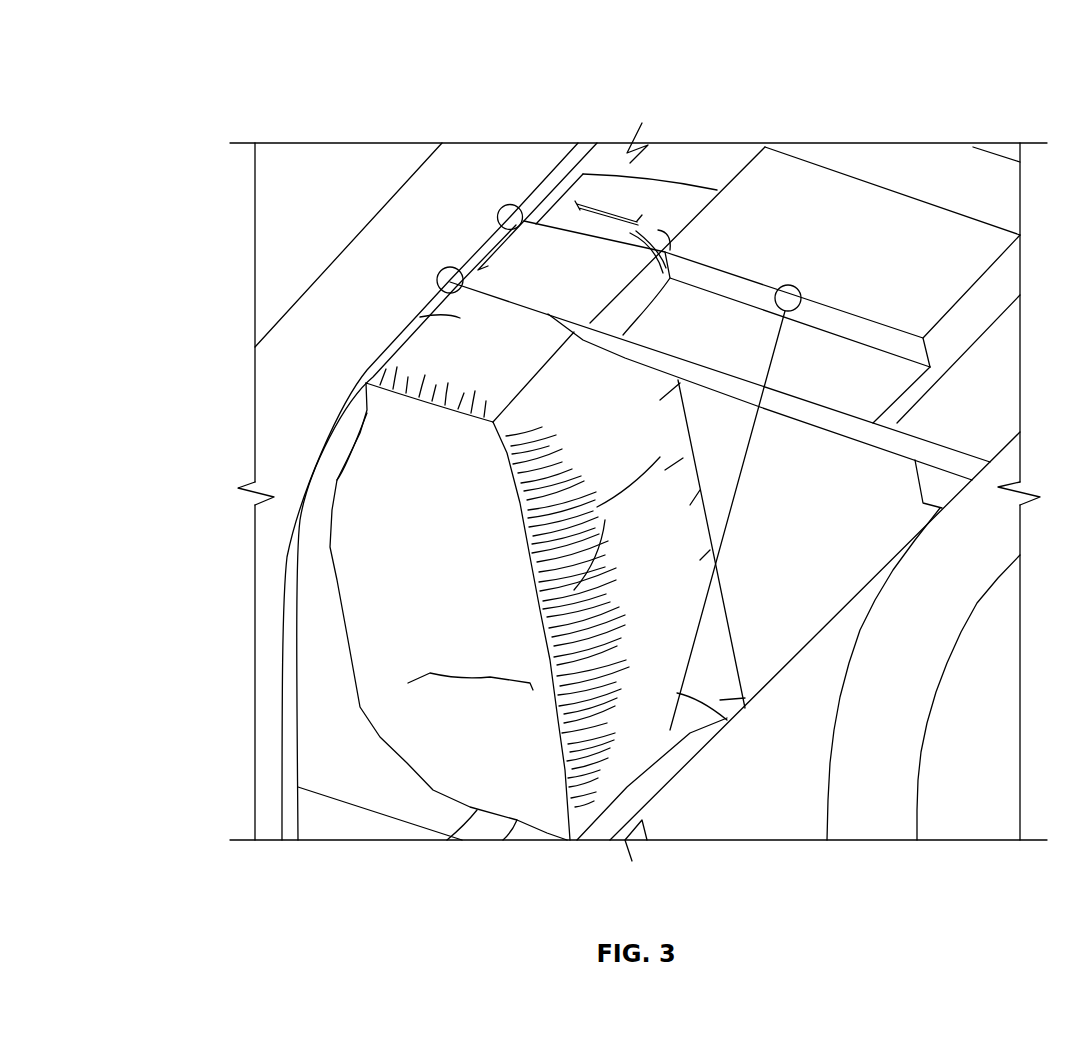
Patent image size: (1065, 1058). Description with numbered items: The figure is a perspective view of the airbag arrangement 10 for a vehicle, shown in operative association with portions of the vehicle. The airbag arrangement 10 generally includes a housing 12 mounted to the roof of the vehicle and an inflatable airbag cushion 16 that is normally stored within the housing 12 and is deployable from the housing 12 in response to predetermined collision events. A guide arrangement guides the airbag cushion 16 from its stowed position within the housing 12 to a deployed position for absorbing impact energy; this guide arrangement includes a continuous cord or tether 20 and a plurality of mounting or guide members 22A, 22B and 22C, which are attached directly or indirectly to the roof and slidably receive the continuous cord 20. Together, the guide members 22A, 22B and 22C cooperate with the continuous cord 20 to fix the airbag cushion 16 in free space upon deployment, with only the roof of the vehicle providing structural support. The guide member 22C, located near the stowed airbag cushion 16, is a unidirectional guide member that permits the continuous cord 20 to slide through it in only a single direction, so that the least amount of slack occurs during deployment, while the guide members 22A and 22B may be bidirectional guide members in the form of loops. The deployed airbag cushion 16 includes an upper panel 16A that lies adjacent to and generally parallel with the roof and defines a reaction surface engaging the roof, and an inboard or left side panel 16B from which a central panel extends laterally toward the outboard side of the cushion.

The airbag arrangement 10 is at (198, 74).
The housing 12 is at (793, 190).
The inflatable airbag cushion 16 is at (452, 772).
The upper panel 16A is at (405, 362).
The inboard panel 16B is at (677, 693).
The continuous cord 20 is at (727, 528).
The guide member 22A is at (438, 275).
The guide member 22B is at (498, 208).
The unidirectional guide member 22C is at (794, 285).